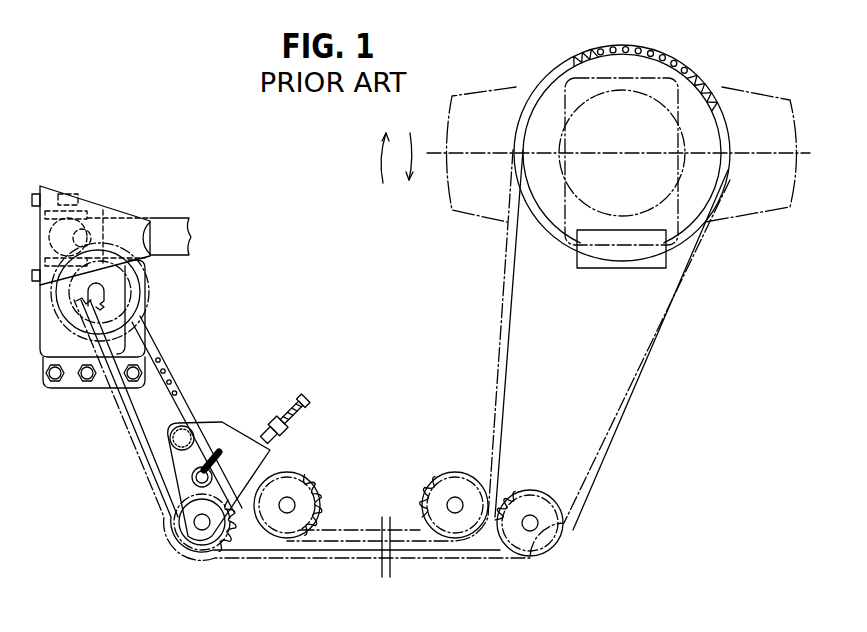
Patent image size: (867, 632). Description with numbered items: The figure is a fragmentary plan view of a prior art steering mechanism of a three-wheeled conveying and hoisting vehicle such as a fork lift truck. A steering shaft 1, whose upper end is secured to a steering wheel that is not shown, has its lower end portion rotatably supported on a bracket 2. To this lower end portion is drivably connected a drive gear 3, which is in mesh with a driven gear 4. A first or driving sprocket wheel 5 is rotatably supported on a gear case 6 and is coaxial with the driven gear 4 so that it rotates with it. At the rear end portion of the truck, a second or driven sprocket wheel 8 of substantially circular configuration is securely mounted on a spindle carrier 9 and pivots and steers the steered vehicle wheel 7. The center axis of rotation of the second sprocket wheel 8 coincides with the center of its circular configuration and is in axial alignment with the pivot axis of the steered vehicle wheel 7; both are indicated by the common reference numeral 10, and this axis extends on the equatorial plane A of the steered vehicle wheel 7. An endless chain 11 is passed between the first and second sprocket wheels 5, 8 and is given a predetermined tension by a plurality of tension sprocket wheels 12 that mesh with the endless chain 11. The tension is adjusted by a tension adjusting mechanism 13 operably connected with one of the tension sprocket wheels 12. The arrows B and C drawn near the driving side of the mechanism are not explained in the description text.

The steering shaft 1 is at (178, 218).
The bracket 2 is at (128, 213).
The drive gear 3 is at (140, 260).
The driven gear 4 is at (64, 322).
The first or driving sprocket wheel 5 is at (128, 298).
The gear case 6 is at (146, 273).
The steered vehicle wheel 7 is at (467, 90).
The second or driven sprocket wheel 8 is at (556, 244).
The spindle carrier 9 is at (655, 48).
The center axis of rotation / pivot axis 10 is at (623, 156).
The endless chain 11 is at (620, 410).
The tension sprocket wheels 12 is at (222, 548).
The tension adjusting mechanism 13 is at (238, 421).
The equatorial plane A is at (775, 158).
The rotation direction B is at (385, 143).
The rotation direction C is at (407, 172).